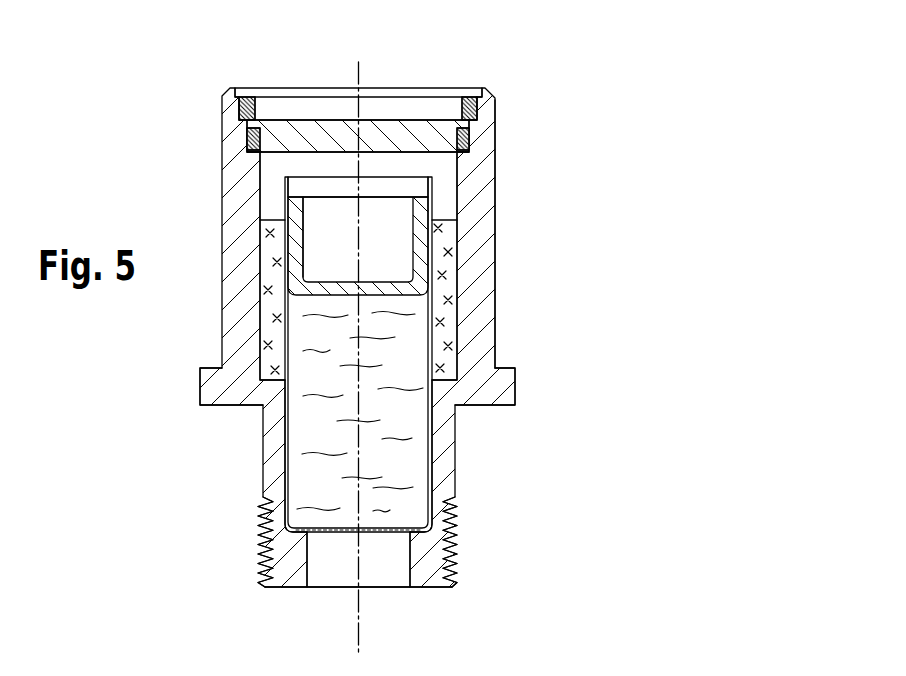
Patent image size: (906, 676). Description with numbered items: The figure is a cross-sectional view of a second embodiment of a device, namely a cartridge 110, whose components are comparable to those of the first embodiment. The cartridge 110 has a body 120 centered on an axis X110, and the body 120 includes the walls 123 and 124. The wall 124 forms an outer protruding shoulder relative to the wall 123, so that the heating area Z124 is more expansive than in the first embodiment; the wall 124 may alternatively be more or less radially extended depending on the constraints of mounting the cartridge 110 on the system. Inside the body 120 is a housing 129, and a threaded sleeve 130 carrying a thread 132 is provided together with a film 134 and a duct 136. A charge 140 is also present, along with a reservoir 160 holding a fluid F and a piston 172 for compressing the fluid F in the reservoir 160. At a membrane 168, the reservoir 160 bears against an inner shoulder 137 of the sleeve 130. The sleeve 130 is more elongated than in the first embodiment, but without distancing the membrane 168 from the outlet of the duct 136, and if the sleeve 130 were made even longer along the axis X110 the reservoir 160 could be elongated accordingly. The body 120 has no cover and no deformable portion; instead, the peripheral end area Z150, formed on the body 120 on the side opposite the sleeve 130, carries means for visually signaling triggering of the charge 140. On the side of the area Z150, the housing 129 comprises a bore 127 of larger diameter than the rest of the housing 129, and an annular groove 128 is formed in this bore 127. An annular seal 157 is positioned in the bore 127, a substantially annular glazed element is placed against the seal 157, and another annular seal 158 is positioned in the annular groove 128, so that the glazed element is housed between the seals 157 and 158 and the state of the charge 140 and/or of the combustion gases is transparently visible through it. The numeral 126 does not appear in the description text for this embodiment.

The cartridge 110 is at (160, 136).
The axis X110 is at (358, 348).
The body 120 is at (475, 350).
The wall 123 is at (473, 279).
The wall 124 is at (488, 396).
The heating area Z124 is at (222, 410).
The cover plate 126 is at (414, 80).
The bore 127 is at (480, 155).
The annular groove 128 is at (488, 108).
The housing 129 is at (445, 193).
The threaded sleeve 130 is at (432, 574).
The thread 132 is at (463, 559).
The film 134 is at (457, 530).
The duct 136 is at (381, 562).
The inner shoulder 137 is at (307, 521).
The charge 140 is at (268, 325).
The peripheral end area Z150 is at (477, 50).
The annular seal 157 is at (469, 134).
The annular seal 158 is at (471, 96).
The reservoir 160 is at (428, 336).
The membrane 168 is at (392, 524).
The piston 172 is at (292, 250).
The fluid F is at (313, 425).